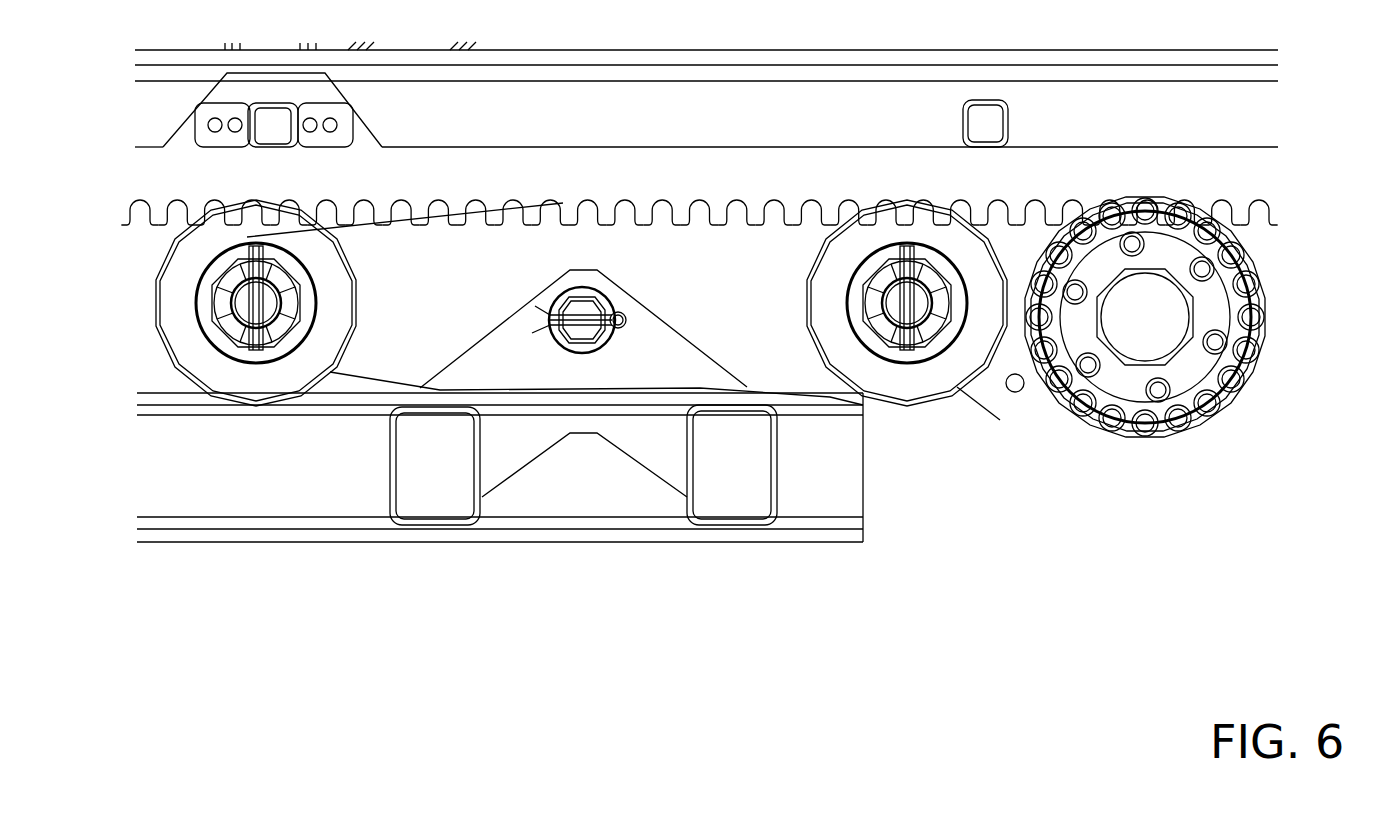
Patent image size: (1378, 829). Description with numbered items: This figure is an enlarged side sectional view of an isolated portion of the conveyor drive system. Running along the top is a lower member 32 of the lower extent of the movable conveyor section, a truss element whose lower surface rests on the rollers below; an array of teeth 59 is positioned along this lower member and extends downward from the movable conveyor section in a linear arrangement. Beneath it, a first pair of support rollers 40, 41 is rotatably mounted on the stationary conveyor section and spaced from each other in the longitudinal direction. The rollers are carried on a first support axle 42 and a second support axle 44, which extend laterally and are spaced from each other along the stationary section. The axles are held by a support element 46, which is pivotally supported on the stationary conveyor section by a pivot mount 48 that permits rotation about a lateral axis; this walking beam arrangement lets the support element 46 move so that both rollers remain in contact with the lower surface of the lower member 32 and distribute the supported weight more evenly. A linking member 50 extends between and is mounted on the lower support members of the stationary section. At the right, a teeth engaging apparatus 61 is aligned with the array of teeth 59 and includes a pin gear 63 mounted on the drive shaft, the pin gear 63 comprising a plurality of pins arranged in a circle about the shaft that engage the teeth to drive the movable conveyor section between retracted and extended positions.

The lower member 32 is at (783, 112).
The array of teeth 59 is at (583, 148).
The support roller 40 is at (955, 363).
The support roller 41 is at (258, 380).
The first support axle 42 is at (918, 323).
The second support axle 44 is at (230, 327).
The support element 46 is at (785, 358).
The pivot mount 48 is at (585, 356).
The linking member 50 is at (482, 500).
The teeth engaging apparatus 61 is at (1230, 462).
The pin gear 63 is at (1175, 430).